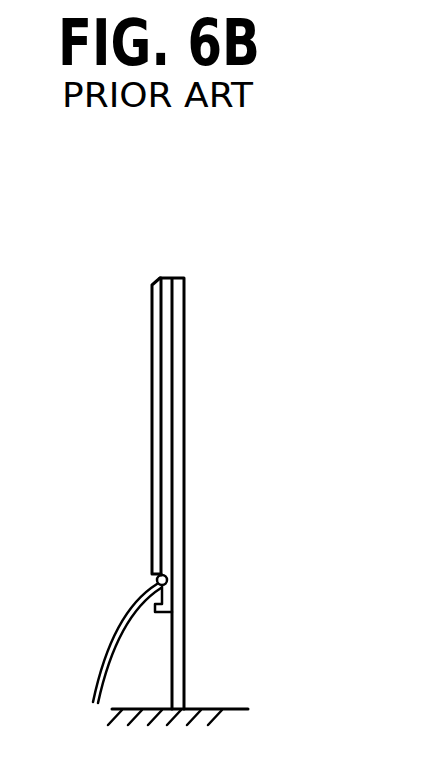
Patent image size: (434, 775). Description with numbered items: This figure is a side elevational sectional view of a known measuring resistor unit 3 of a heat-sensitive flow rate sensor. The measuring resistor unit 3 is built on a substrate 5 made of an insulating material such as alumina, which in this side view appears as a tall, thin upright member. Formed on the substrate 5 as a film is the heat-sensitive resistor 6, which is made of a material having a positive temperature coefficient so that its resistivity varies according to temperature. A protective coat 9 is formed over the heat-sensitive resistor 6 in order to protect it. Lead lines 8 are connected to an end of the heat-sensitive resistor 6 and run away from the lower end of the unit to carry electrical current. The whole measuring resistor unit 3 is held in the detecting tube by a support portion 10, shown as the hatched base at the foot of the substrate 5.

The measuring resistor unit 3 is at (165, 258).
The substrate 5 is at (186, 643).
The heat-sensitive resistor 6 is at (172, 490).
The lead lines 8 is at (118, 626).
The protective coat 9 is at (157, 387).
The support portion 10 is at (228, 716).